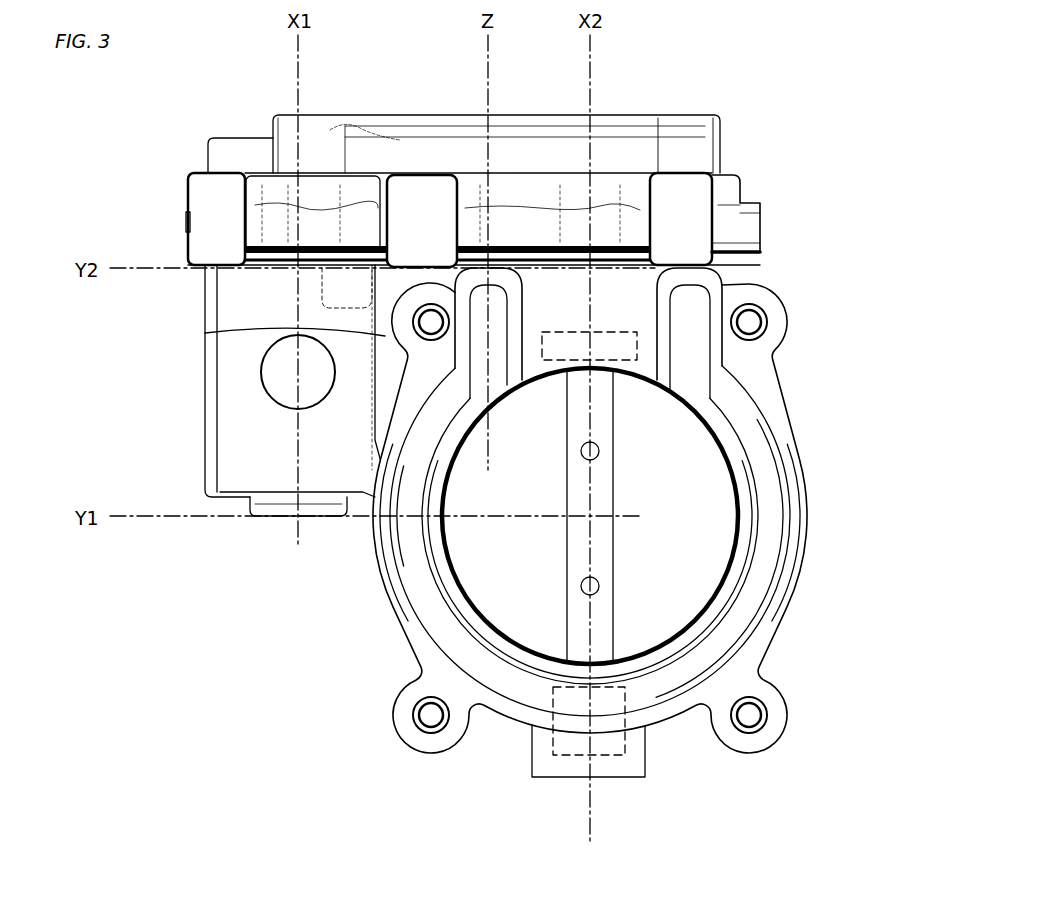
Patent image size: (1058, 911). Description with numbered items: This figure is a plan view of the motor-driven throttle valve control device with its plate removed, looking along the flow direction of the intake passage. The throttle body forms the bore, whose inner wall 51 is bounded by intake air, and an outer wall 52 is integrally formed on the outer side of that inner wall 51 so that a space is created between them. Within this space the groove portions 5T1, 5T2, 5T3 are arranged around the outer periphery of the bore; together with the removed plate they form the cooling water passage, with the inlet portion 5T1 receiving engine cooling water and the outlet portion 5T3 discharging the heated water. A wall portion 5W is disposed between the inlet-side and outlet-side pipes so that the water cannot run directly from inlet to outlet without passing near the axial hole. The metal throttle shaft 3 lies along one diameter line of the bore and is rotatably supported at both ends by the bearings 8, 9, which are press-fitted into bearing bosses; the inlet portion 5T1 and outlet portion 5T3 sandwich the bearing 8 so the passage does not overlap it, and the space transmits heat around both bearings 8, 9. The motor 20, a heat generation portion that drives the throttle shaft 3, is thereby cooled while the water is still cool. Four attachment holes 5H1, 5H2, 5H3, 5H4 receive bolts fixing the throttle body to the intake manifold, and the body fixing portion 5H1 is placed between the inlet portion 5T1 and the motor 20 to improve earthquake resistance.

The throttle shaft 3 is at (610, 545).
The bearing 8 is at (637, 347).
The bearing 9 is at (625, 742).
The motor 20 is at (243, 405).
The inner wall 51 is at (398, 580).
The outer wall 52 is at (422, 548).
The attachment hole 5H1 is at (414, 330).
The attachment hole 5H2 is at (765, 315).
The attachment hole 5H3 is at (413, 727).
The attachment hole 5H4 is at (764, 728).
The inlet portion 5T1 is at (481, 328).
The groove portion 5T2 is at (517, 686).
The outlet portion 5T3 is at (693, 314).
The wall portion 5W is at (608, 320).